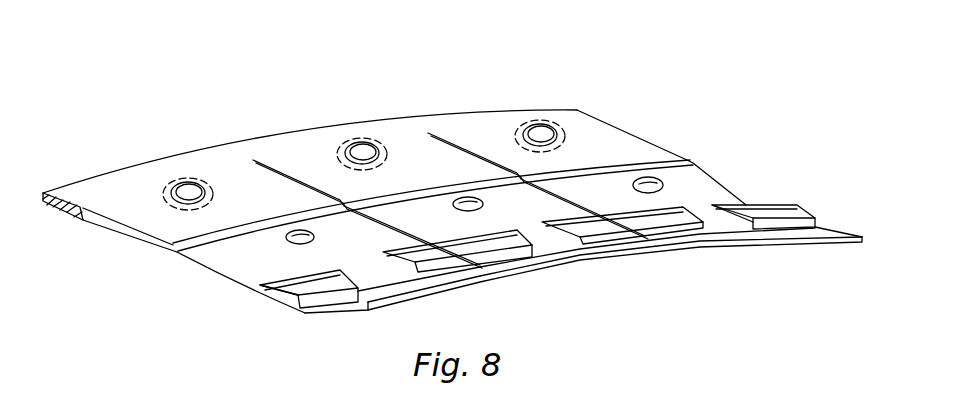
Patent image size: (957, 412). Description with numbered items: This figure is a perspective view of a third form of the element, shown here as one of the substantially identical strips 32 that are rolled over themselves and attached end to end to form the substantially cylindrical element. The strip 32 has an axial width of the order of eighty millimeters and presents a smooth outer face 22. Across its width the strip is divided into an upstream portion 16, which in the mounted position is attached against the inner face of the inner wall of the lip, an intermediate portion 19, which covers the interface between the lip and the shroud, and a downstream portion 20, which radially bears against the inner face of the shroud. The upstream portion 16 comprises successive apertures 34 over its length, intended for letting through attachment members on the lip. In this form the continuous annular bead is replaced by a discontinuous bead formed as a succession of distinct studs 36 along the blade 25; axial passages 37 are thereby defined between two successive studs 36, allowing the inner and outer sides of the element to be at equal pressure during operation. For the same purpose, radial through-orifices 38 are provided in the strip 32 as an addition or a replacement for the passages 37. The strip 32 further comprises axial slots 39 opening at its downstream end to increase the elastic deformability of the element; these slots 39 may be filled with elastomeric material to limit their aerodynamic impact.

The upstream portion 16 is at (88, 227).
The intermediate portion 19 is at (203, 278).
The downstream portion 20 is at (305, 320).
The outer face 22 is at (602, 140).
The blade 25 is at (822, 250).
The strip 32 is at (620, 63).
The apertures 34 is at (186, 188).
The studs 36 is at (775, 211).
The axial passages 37 is at (720, 221).
The radial through-orifices 38 is at (318, 237).
The axial slots 39 is at (284, 175).